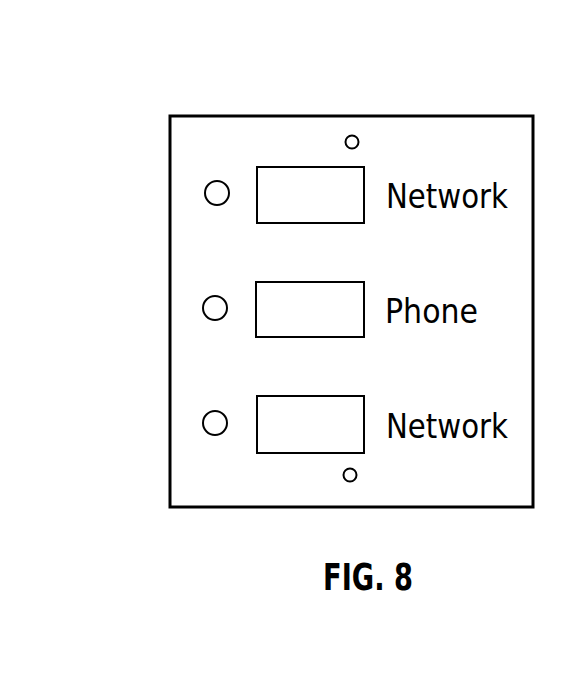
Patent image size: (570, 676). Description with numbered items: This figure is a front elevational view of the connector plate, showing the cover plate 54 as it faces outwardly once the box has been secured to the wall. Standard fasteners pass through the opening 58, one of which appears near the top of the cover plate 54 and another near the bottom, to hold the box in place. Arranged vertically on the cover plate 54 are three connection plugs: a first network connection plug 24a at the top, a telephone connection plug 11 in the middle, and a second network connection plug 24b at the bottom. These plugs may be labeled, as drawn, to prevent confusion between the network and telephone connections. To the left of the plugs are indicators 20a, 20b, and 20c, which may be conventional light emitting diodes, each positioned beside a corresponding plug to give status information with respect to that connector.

The cover plate 54 is at (475, 116).
The opening 58 is at (356, 137).
The indicator 20a is at (206, 188).
The indicator 20b is at (204, 302).
The indicator 20c is at (204, 417).
The network connection plug 24a is at (336, 210).
The telephone connection plug 11 is at (323, 325).
The network connection plug 24b is at (337, 440).